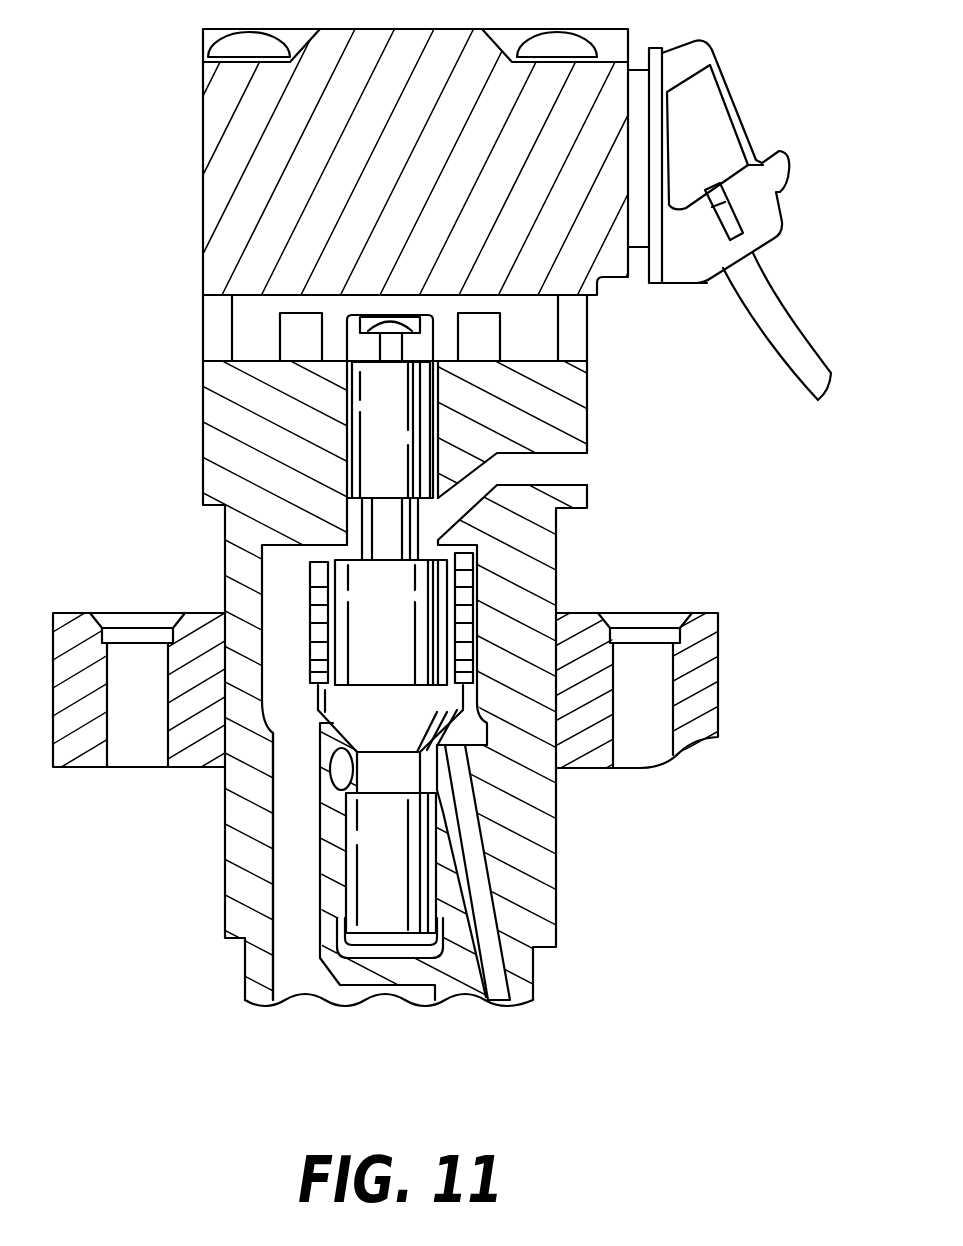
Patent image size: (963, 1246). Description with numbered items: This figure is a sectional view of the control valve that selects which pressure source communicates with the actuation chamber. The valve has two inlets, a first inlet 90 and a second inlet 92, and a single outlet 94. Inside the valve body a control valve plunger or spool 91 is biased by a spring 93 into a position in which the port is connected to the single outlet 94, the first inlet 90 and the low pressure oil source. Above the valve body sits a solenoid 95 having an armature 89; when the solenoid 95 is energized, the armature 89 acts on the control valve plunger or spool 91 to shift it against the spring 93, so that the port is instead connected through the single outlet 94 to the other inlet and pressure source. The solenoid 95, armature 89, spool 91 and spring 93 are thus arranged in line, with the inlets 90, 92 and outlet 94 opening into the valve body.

The solenoid 95 is at (277, 162).
The armature 89 is at (278, 334).
The control valve plunger or spool 91 is at (345, 440).
The second inlet 92 is at (568, 473).
The spring 93 is at (285, 589).
The single outlet 94 is at (285, 901).
The first inlet 90 is at (508, 872).